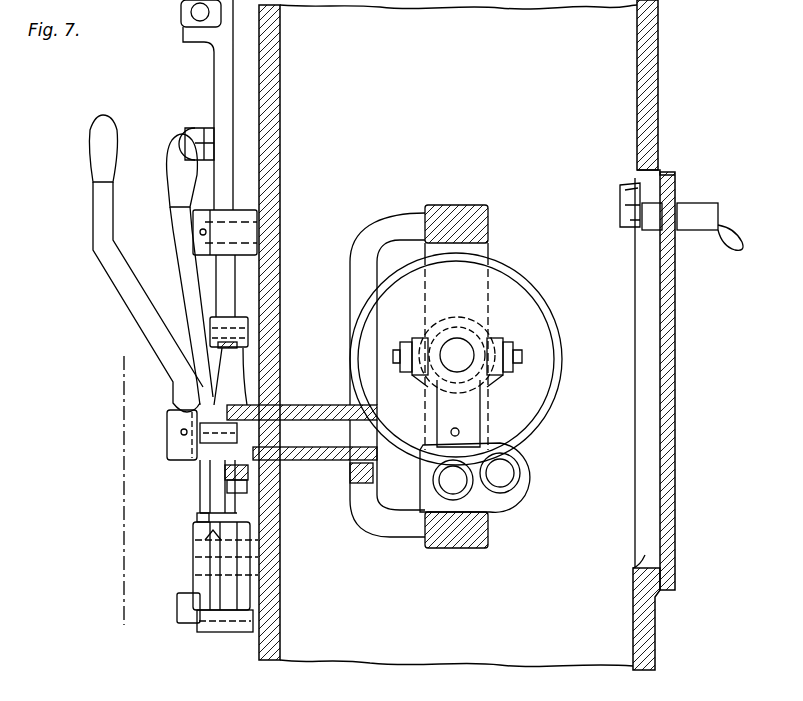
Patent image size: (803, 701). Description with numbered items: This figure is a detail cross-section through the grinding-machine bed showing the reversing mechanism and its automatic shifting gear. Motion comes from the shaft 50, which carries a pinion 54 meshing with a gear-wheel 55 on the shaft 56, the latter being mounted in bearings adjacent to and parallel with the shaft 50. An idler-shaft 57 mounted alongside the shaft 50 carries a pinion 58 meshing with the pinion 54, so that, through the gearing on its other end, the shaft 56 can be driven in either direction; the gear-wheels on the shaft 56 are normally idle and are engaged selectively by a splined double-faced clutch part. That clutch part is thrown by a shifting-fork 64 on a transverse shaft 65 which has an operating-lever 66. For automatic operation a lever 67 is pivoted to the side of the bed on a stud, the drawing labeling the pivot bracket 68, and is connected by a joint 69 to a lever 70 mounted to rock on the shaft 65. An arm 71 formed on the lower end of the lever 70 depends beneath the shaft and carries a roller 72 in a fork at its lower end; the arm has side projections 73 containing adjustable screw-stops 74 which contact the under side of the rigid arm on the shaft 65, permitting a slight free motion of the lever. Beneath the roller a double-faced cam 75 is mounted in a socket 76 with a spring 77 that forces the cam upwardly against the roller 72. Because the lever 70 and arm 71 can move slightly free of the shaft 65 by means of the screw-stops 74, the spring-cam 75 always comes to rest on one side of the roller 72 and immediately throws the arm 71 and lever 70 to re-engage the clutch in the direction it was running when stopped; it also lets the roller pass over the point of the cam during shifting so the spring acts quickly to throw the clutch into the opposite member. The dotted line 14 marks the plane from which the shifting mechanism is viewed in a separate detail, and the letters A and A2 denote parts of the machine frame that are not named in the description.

The casing wall A is at (277, 130).
The casing cover wall A2 is at (675, 305).
The dotted line 14 14 is at (85, 356).
The shaft 50 is at (500, 472).
The pinion 54 is at (522, 478).
The gear-wheel 55 is at (485, 440).
The shaft 56 is at (458, 355).
The idler-shaft 57 is at (433, 513).
The pinion 58 is at (440, 484).
The shifting-fork 64 is at (450, 407).
The transverse shaft 65 is at (283, 432).
The operating-lever 66 is at (130, 296).
The lever 67 is at (222, 99).
The guide bracket 68 is at (260, 235).
The joint 69 is at (250, 330).
The lever 70 is at (227, 355).
The arm 71 is at (210, 483).
The roller 72 is at (215, 505).
The side projections 73 is at (250, 470).
The adjustable screw-stops 74 is at (238, 490).
The double-faced cam 75 is at (200, 518).
The socket 76 is at (192, 563).
The spring 77 is at (200, 580).